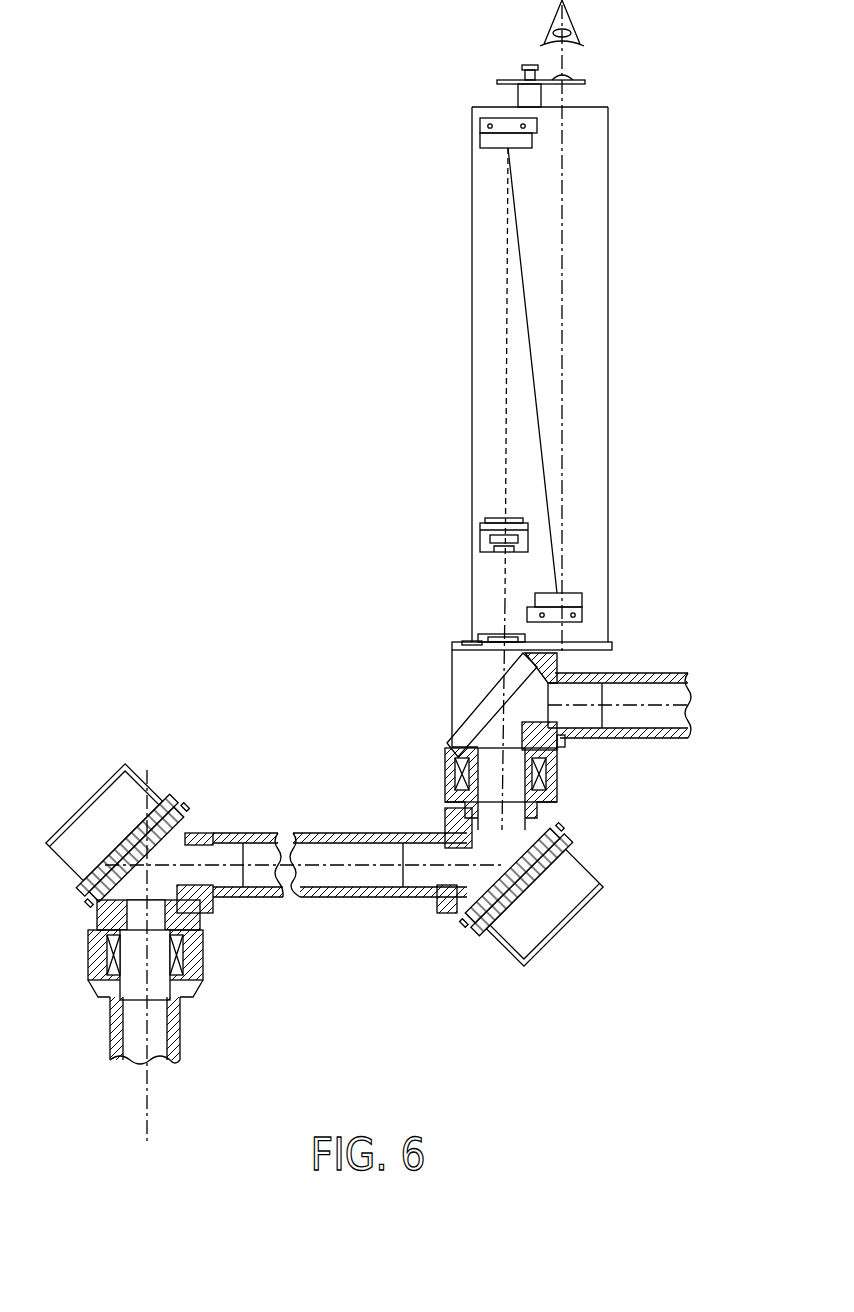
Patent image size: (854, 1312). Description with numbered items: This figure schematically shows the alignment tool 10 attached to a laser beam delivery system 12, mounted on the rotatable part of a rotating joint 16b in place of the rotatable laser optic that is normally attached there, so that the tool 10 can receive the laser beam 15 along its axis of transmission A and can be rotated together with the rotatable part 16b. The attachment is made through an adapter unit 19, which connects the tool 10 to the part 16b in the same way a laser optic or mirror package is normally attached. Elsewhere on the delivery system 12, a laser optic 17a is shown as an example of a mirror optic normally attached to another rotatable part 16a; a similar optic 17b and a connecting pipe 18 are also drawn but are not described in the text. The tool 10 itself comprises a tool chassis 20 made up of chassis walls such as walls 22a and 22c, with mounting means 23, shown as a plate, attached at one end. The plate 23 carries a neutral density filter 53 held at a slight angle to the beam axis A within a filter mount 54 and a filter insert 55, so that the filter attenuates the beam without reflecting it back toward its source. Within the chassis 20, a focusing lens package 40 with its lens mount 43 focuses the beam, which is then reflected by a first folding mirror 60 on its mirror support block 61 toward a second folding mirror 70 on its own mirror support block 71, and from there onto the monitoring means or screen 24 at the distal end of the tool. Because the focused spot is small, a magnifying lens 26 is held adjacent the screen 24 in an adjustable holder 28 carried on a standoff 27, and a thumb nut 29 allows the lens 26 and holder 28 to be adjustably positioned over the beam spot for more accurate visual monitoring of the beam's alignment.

The alignment tool 10 is at (650, 202).
The laser beam delivery system 12 is at (247, 905).
The laser beam 15 is at (145, 1107).
The rotatable part 16a is at (96, 905).
The rotatable joint 16b is at (565, 790).
The laser optic 17a is at (145, 787).
The right inclined tube 17b is at (540, 912).
The horizontal pipe 18 is at (342, 897).
The adapter unit 19 is at (455, 692).
The tool chassis 20 is at (612, 348).
The chassis wall 22a is at (472, 285).
The chassis wall 22c is at (610, 257).
The mounting means 23 is at (598, 650).
The monitoring means 24 is at (570, 107).
The magnifying lens 26 is at (568, 80).
The standoff 27 is at (520, 97).
The adjustable holder 28 is at (500, 80).
The thumb nut 29 is at (528, 65).
The focusing lens package 40 is at (485, 512).
The lens mount 43 is at (480, 538).
The neutral density filter 53 is at (500, 634).
The filter mount 54 is at (465, 642).
The filter insert 55 is at (485, 636).
The first folding mirror 60 is at (490, 148).
The mirror support block 61 is at (480, 123).
The second folding mirror 70 is at (567, 594).
The mirror support block 71 is at (565, 620).
The laser beam axis A is at (505, 668).